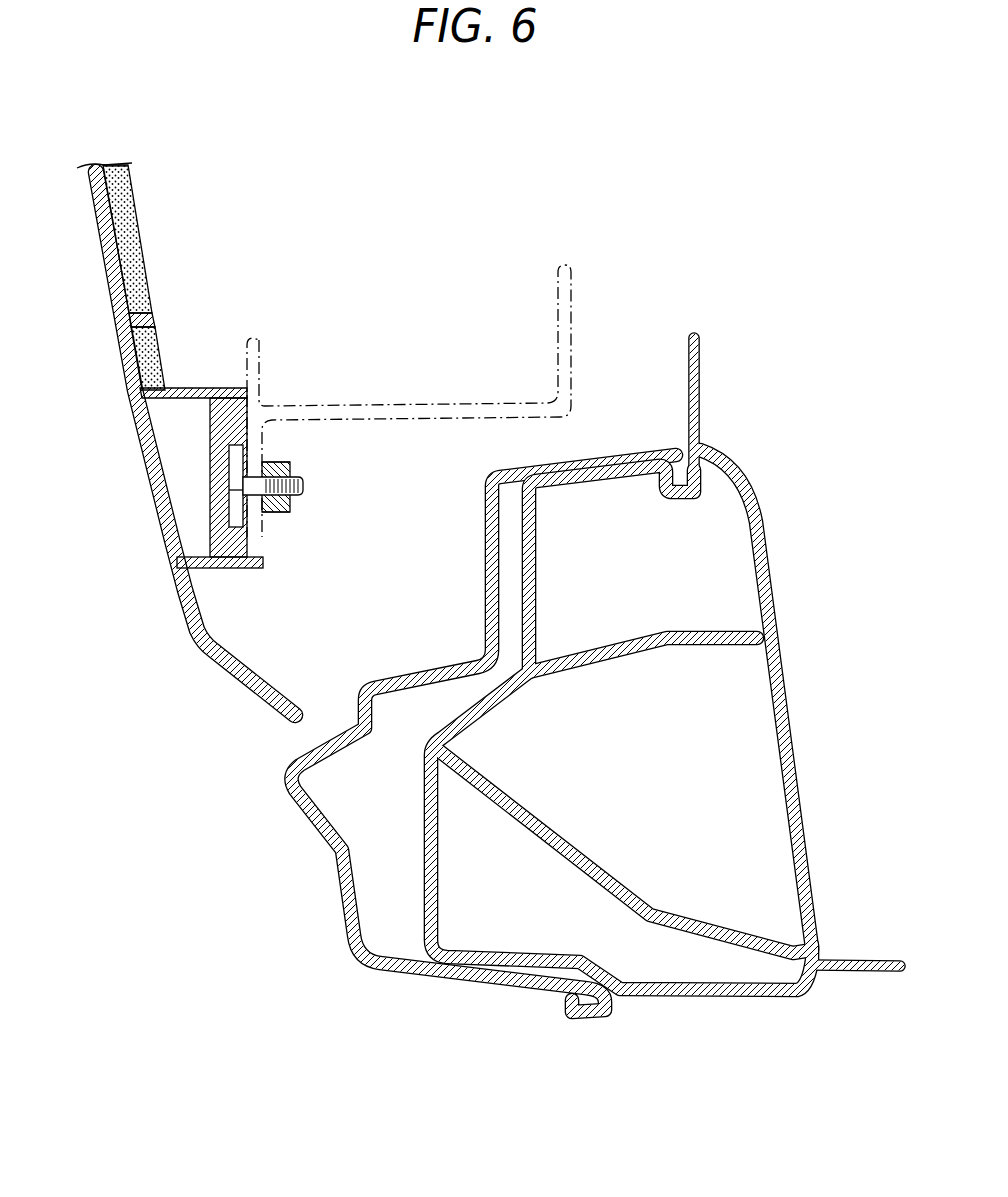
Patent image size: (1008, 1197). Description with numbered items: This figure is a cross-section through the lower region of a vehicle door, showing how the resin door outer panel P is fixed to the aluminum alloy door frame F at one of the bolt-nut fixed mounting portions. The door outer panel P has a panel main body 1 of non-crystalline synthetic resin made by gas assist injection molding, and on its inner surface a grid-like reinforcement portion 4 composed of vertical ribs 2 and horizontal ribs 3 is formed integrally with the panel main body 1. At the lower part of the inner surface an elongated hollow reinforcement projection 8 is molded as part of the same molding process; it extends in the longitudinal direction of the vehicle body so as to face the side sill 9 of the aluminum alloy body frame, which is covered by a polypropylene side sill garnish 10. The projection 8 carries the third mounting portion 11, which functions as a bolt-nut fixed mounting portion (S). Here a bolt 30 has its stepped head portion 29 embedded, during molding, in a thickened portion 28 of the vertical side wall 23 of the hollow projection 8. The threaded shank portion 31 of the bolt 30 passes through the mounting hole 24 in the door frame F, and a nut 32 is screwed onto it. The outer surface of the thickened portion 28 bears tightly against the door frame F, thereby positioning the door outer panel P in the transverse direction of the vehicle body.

The panel main body 1 is at (155, 472).
The vertical ribs 2 is at (118, 208).
The horizontal ribs 3 is at (143, 313).
The grid-like reinforcement portion 4 is at (119, 181).
The elongated hollow reinforcement projection 8 is at (182, 444).
The side sill 9 is at (767, 562).
The side sill garnish 10 is at (330, 857).
The third mounting portion 11 is at (303, 516).
The vertical side wall 23 is at (210, 494).
The mounting hole 24 is at (289, 461).
The thickened portion 28 is at (232, 388).
The stepped head portion 29 is at (238, 562).
The bolt 30 is at (230, 455).
The threaded shank portion 31 is at (303, 484).
The nut 32 is at (278, 512).
The door outer panel P is at (114, 324).
The door frame F is at (369, 409).